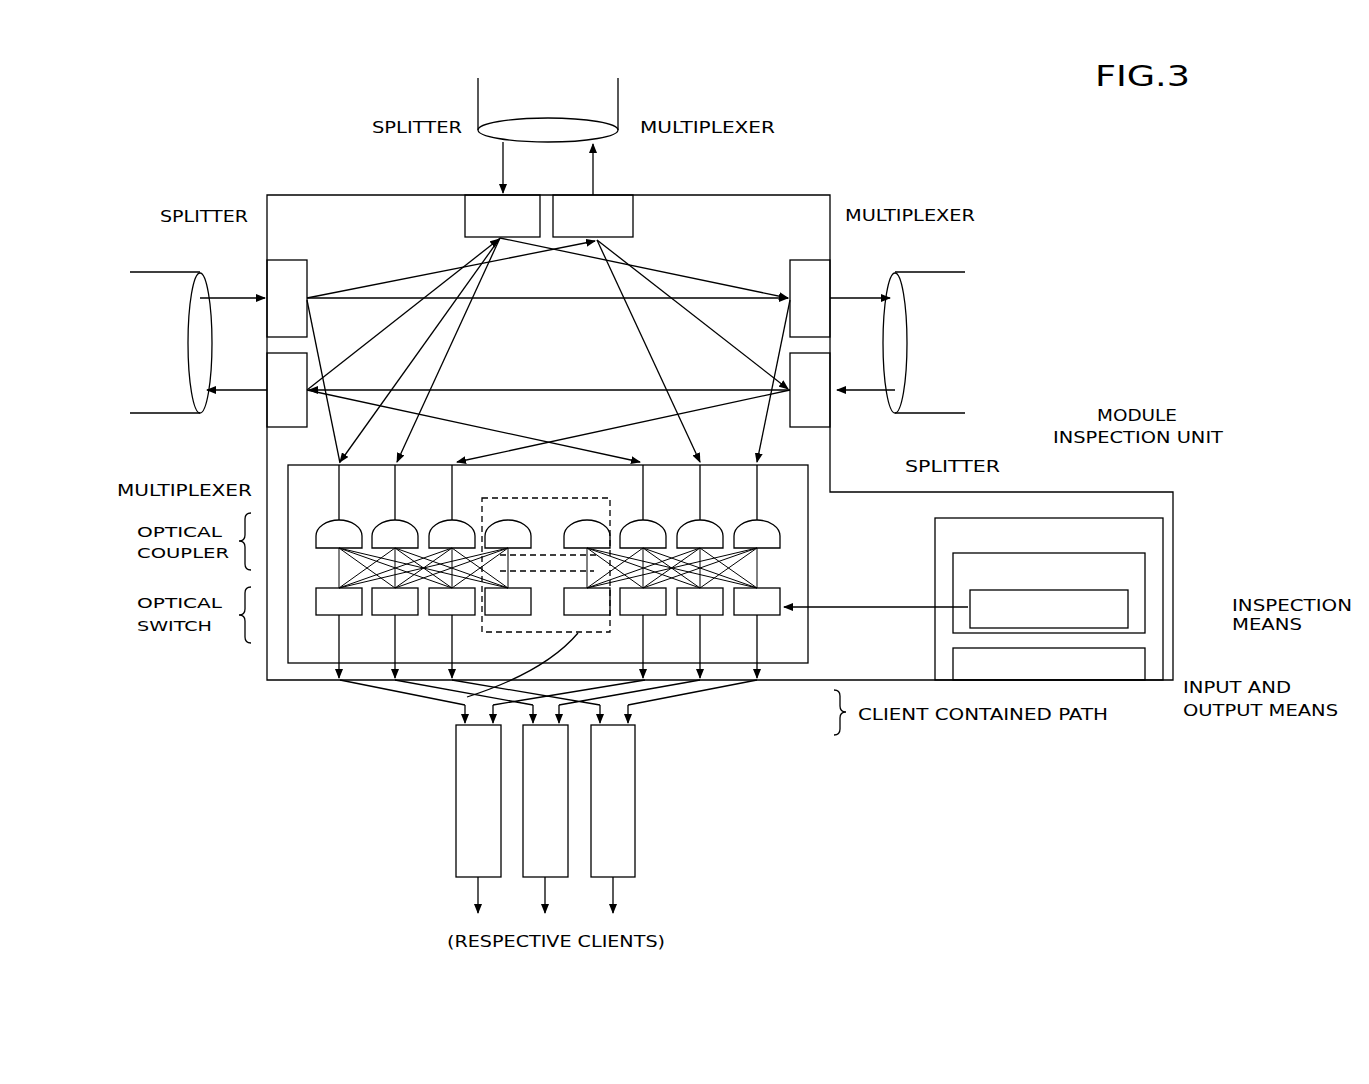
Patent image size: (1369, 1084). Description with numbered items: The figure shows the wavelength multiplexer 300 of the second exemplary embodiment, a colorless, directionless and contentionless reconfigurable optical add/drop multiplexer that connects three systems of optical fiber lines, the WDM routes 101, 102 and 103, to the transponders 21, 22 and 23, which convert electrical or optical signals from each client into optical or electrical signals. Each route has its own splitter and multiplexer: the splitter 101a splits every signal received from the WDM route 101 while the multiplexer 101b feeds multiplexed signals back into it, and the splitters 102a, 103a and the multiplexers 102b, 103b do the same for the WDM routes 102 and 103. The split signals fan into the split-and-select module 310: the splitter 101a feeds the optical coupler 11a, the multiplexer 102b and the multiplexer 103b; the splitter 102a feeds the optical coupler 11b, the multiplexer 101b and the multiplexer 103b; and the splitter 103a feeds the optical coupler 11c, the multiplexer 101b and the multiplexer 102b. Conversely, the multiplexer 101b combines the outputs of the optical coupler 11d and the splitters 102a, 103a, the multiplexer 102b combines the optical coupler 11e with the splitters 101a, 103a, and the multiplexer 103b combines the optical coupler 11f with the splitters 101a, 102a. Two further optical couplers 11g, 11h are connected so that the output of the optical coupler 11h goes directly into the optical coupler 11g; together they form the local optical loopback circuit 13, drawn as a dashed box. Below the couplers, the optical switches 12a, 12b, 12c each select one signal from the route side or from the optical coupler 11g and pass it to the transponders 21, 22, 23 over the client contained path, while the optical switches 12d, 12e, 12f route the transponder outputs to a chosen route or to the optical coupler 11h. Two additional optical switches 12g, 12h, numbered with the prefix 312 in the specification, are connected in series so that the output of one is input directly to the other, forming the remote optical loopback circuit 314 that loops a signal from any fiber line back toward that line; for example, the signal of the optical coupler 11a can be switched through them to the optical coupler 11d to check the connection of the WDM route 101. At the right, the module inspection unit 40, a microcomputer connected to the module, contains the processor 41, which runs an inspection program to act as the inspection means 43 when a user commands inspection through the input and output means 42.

The wavelength multiplexer 300 is at (298, 194).
The split-and-select module 310 is at (123, 515).
The WDM route 101 is at (177, 272).
The splitter 101a is at (292, 258).
The multiplexer 101b is at (280, 427).
The WDM route 102 is at (923, 272).
The splitter 102a is at (820, 428).
The multiplexer 102b is at (800, 258).
The WDM route 103 is at (477, 91).
The splitter 103a is at (478, 195).
The multiplexer 103b is at (617, 192).
The optical coupler 11a is at (328, 517).
The optical coupler 11b is at (384, 517).
The optical coupler 11c is at (440, 517).
The optical coupler 11d is at (632, 517).
The optical coupler 11e is at (688, 517).
The optical coupler 11f is at (748, 517).
The optical coupler 11g is at (506, 516).
The optical coupler 11h is at (585, 516).
The optical switch 12a is at (343, 616).
The optical switch 12b is at (398, 616).
The optical switch 12c is at (456, 616).
The optical switch 12d is at (648, 616).
The optical switch 12e is at (705, 616).
The optical switch 12f is at (762, 616).
The optical switch 12g is at (509, 618).
The optical switch 12h is at (582, 618).
The local optical loopback circuit 13 is at (592, 500).
The optical switches of remote optical loopback circuit 312 is at (531, 665).
The remote optical loopback circuit 314 is at (453, 705).
The module inspection unit 40 is at (1135, 518).
The processor 41 is at (1145, 563).
The input and output means 42 is at (1145, 663).
The inspection means 43 is at (1128, 607).
The transponder 21 is at (487, 880).
The transponder 22 is at (553, 880).
The transponder 23 is at (621, 880).